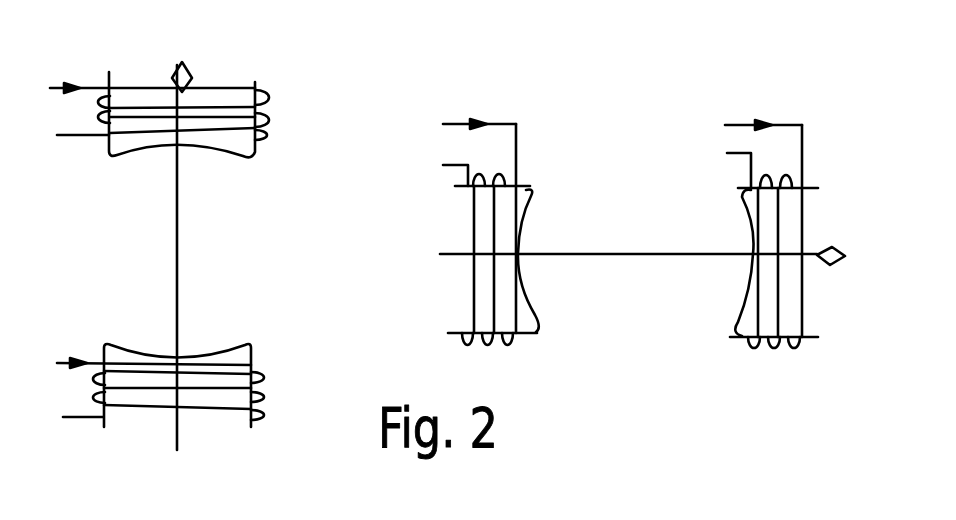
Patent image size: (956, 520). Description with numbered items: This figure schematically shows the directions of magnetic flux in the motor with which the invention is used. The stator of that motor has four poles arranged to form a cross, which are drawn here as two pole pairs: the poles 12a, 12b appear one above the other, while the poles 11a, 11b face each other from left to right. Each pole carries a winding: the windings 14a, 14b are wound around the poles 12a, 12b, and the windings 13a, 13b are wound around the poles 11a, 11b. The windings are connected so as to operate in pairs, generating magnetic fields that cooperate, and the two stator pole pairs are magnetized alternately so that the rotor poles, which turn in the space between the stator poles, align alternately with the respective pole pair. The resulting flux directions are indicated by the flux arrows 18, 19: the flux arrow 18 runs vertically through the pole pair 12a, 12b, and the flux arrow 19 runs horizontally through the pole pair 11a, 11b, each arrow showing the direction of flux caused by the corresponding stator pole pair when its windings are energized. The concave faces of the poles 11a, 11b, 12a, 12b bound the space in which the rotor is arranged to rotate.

The stator pole 11a is at (530, 188).
The stator pole 11b is at (750, 317).
The stator pole 12a is at (240, 355).
The stator pole 12b is at (240, 145).
The winding 13a is at (473, 212).
The winding 13b is at (803, 232).
The winding 14a is at (203, 408).
The winding 14b is at (216, 90).
The flux arrow 18 is at (180, 250).
The flux arrow 19 is at (645, 260).